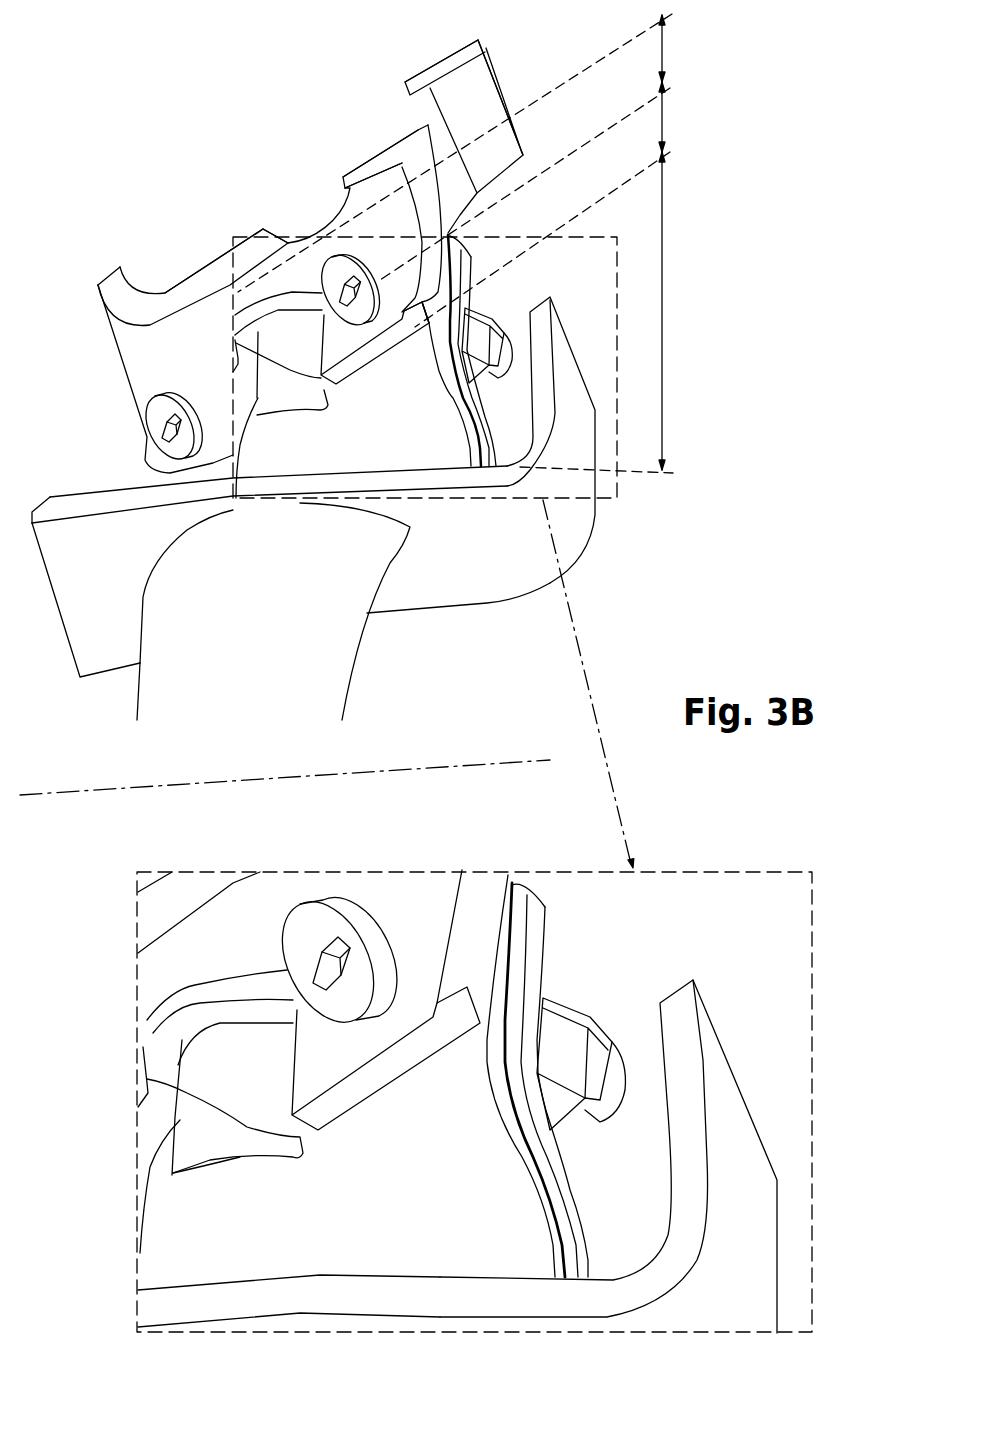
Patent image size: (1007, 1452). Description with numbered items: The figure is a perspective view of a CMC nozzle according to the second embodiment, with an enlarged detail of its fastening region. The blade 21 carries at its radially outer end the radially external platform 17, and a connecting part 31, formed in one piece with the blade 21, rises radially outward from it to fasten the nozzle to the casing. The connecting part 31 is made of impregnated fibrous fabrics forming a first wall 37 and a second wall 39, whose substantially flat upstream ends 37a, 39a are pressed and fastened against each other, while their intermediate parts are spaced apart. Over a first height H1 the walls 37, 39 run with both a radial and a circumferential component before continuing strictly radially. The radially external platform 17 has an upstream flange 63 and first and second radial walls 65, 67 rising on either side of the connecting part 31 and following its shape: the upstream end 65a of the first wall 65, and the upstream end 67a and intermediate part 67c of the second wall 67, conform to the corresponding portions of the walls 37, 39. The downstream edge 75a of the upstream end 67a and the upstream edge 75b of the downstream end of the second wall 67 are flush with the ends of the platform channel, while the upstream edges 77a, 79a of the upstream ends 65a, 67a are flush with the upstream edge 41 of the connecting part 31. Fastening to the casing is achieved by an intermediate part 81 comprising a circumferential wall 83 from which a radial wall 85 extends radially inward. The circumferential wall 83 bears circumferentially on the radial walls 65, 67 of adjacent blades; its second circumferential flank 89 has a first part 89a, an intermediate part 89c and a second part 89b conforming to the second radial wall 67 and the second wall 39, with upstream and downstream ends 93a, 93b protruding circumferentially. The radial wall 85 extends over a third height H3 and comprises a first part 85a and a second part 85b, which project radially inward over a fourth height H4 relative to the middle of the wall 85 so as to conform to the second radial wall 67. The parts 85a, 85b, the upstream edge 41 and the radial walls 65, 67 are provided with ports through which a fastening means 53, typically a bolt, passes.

The radially external platform 17 is at (90, 583).
The blade 21 is at (167, 687).
The connecting part 31 is at (440, 366).
The first wall 37 is at (443, 1126).
The upstream end of the first wall 37a is at (492, 870).
The second wall 39 is at (533, 1046).
The upstream end of the second wall 39a is at (565, 893).
The upstream edge 41 is at (438, 235).
The fastening means 53 is at (570, 1052).
The flange 63 is at (582, 422).
The first radial wall 65 is at (557, 967).
The upstream end of the first radial wall 65a is at (605, 1080).
The second radial wall 67 is at (176, 1203).
The upstream end of the second radial wall 67a is at (383, 1157).
The intermediate part of the second radial wall 67c is at (210, 1210).
The downstream edge of the upstream end 75a is at (147, 1079).
The upstream edge of the downstream end 75b is at (160, 1167).
The upstream edge of the first radial wall upstream end 77a is at (545, 945).
The upstream edge of the second radial wall upstream end 79a is at (537, 1220).
The intermediate part 81 is at (498, 64).
The circumferential wall 83 is at (508, 100).
The radial wall 85 is at (456, 235).
The first part of the radial wall 85a is at (466, 258).
The second part of the radial wall 85b is at (153, 473).
The second circumferential flank 89 is at (214, 249).
The first part of the second circumferential flank 89a is at (365, 150).
The second part of the second circumferential flank 89b is at (195, 265).
The intermediate part of the second circumferential flank 89c is at (305, 217).
The upstream end of the second circumferential flank 93a is at (462, 60).
The downstream end of the second circumferential flank 93b is at (105, 280).
The first height H1 is at (682, 311).
The third height H3 is at (682, 48).
The fourth height H4 is at (682, 117).